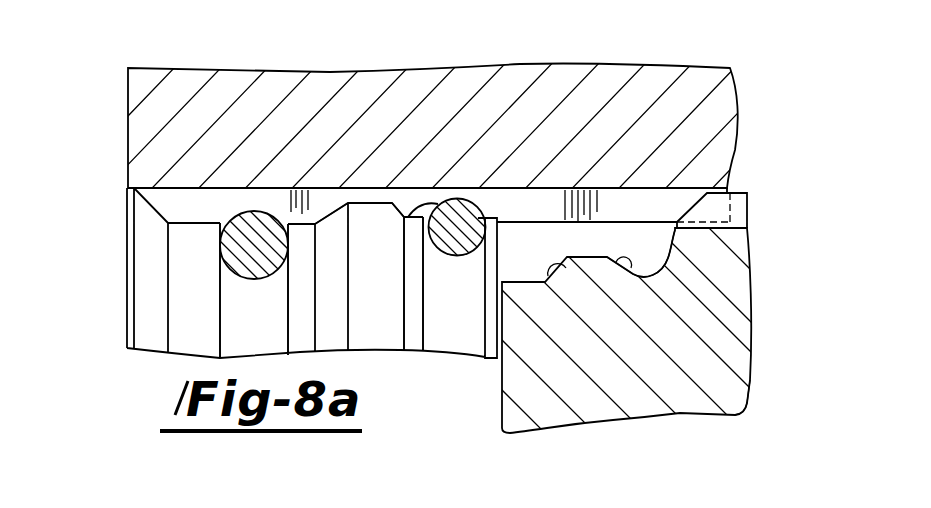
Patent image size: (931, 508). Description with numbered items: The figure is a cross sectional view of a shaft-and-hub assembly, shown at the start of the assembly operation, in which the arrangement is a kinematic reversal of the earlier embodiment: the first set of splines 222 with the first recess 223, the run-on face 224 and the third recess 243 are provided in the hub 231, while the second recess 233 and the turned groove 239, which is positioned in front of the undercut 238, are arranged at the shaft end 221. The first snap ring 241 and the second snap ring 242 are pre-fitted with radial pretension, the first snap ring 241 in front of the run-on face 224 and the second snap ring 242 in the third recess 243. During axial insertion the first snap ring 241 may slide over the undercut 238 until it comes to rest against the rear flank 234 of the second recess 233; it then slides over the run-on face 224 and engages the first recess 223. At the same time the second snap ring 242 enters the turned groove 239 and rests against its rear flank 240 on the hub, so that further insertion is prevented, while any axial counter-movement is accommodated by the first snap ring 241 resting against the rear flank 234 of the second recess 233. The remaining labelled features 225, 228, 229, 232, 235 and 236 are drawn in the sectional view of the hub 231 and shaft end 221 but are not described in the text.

The shaft end 221 is at (748, 300).
The first set of splines 222 is at (182, 200).
The first recess 223 is at (363, 222).
The run-on face 224 is at (410, 200).
The chamfered surface 225 is at (405, 214).
The groove wall 228 is at (421, 216).
The chamfered surface 229 is at (325, 213).
The hub 231 is at (143, 110).
The flange 232 is at (740, 210).
The second recess 233 is at (748, 375).
The rear flank 234 is at (653, 258).
The end face 235 is at (720, 272).
The arcuate recess 236 is at (645, 278).
The undercut 238 is at (566, 270).
The turned groove 239 is at (530, 265).
The rear flank 240 is at (587, 242).
The first snap ring 241 is at (457, 228).
The second snap ring 242 is at (252, 211).
The third recess 243 is at (236, 217).